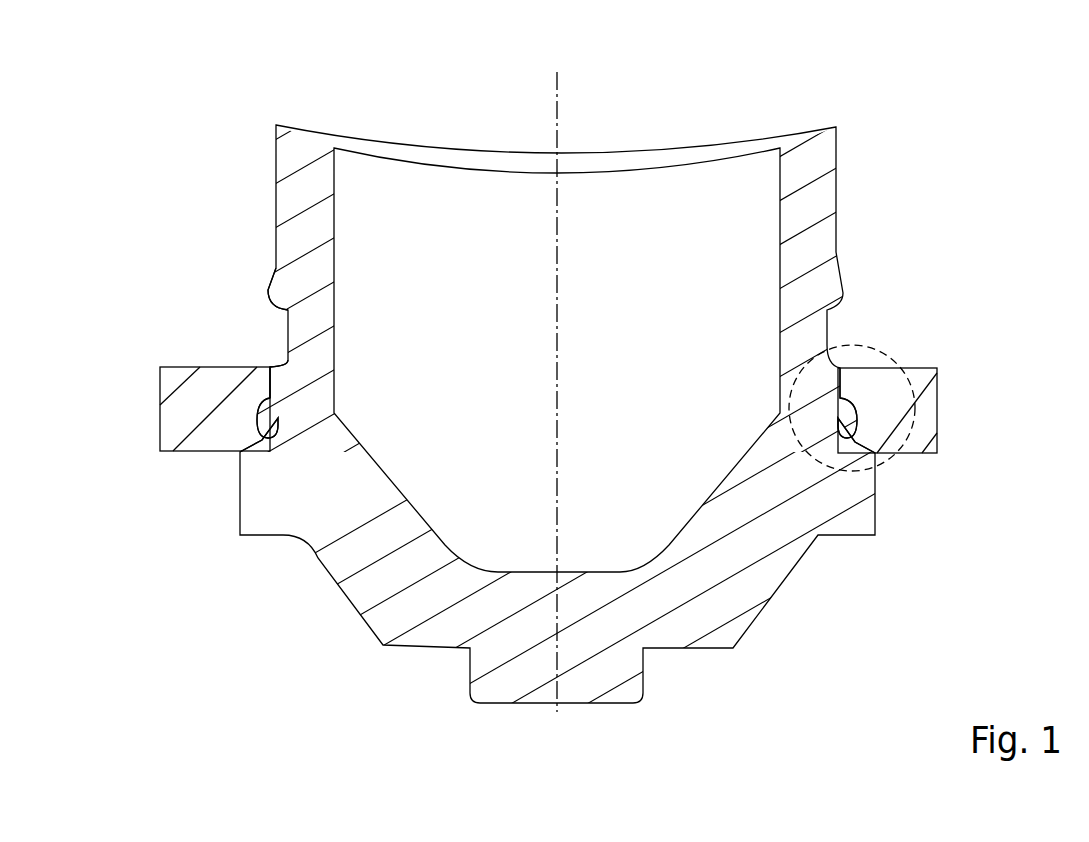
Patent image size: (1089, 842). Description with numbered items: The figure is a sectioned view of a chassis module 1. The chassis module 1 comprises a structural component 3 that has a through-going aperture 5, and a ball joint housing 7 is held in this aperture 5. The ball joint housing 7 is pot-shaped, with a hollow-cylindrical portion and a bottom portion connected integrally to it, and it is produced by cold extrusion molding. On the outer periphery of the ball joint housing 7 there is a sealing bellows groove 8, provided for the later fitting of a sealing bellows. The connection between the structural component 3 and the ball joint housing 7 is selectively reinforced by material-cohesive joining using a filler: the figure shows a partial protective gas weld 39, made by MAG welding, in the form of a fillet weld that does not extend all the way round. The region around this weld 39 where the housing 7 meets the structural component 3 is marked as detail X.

The chassis module 1 is at (137, 187).
The structural component 3 is at (943, 382).
The through-going aperture 5 is at (267, 360).
The ball joint housing 7 is at (848, 132).
The sealing bellows groove 8 is at (272, 315).
The partial protective gas weld 39 is at (880, 460).
The detail region X is at (878, 345).